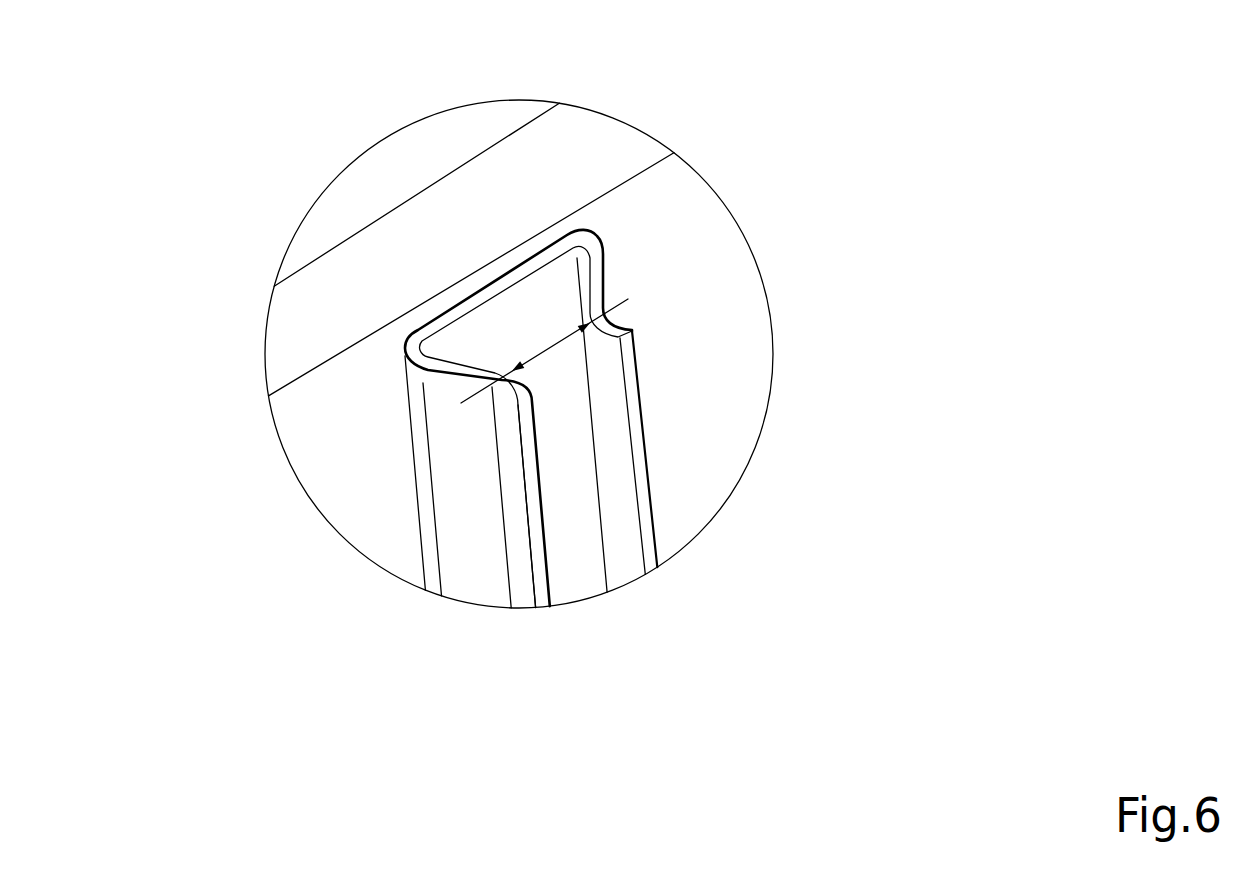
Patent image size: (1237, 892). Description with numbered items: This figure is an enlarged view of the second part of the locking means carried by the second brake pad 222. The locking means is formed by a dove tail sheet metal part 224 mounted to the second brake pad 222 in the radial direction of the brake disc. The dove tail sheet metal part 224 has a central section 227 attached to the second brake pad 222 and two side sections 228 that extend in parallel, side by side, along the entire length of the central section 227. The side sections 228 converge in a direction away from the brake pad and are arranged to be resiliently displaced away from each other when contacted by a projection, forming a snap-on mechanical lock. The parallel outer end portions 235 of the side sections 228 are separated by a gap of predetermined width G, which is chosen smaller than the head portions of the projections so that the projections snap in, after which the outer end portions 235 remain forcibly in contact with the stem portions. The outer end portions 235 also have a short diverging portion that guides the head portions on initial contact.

The second brake pad 222 is at (645, 210).
The central section 227 is at (513, 315).
The side sections 228 is at (453, 455).
The dove tail sheet metal part 224 is at (467, 577).
The outer end portions 235 is at (527, 593).
The width of the gap G is at (551, 358).